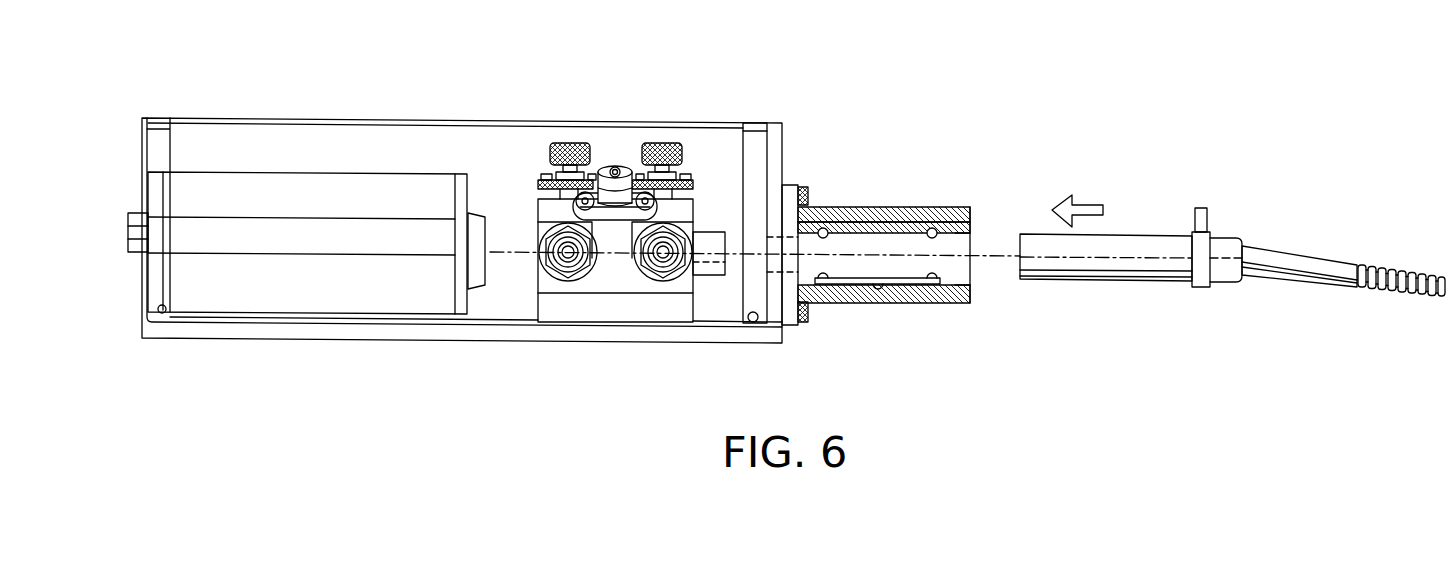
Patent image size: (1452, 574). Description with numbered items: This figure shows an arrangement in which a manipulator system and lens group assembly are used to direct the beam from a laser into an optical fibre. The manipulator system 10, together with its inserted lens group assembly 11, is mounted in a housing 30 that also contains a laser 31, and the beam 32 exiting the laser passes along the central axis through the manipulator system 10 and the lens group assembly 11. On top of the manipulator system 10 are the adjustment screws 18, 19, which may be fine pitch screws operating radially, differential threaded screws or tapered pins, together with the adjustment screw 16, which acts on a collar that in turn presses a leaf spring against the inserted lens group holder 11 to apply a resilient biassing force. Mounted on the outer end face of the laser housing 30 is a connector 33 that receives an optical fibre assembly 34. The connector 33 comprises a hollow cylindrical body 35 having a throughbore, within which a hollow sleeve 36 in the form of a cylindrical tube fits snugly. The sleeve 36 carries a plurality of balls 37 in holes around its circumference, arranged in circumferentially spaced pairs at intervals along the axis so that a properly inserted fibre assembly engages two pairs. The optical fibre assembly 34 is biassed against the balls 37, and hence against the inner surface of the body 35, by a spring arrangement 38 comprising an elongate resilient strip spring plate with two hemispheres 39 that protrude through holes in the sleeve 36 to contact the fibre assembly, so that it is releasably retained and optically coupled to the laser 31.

The manipulator system 10 is at (600, 312).
The lens group holder 11 is at (718, 276).
The adjustment screw 16 is at (616, 166).
The adjustment screw 18 is at (570, 143).
The adjustment screw 19 is at (662, 143).
The housing 30 is at (398, 340).
The laser 31 is at (274, 172).
The beam 32 is at (508, 252).
The connector 33 is at (873, 207).
The optical fibre assembly 34 is at (1115, 281).
The hollow cylindrical body 35 is at (870, 303).
The sleeve 36 is at (970, 229).
The balls 37 is at (822, 224).
The spring arrangement 38 is at (917, 285).
The hemispheres 39 is at (823, 287).